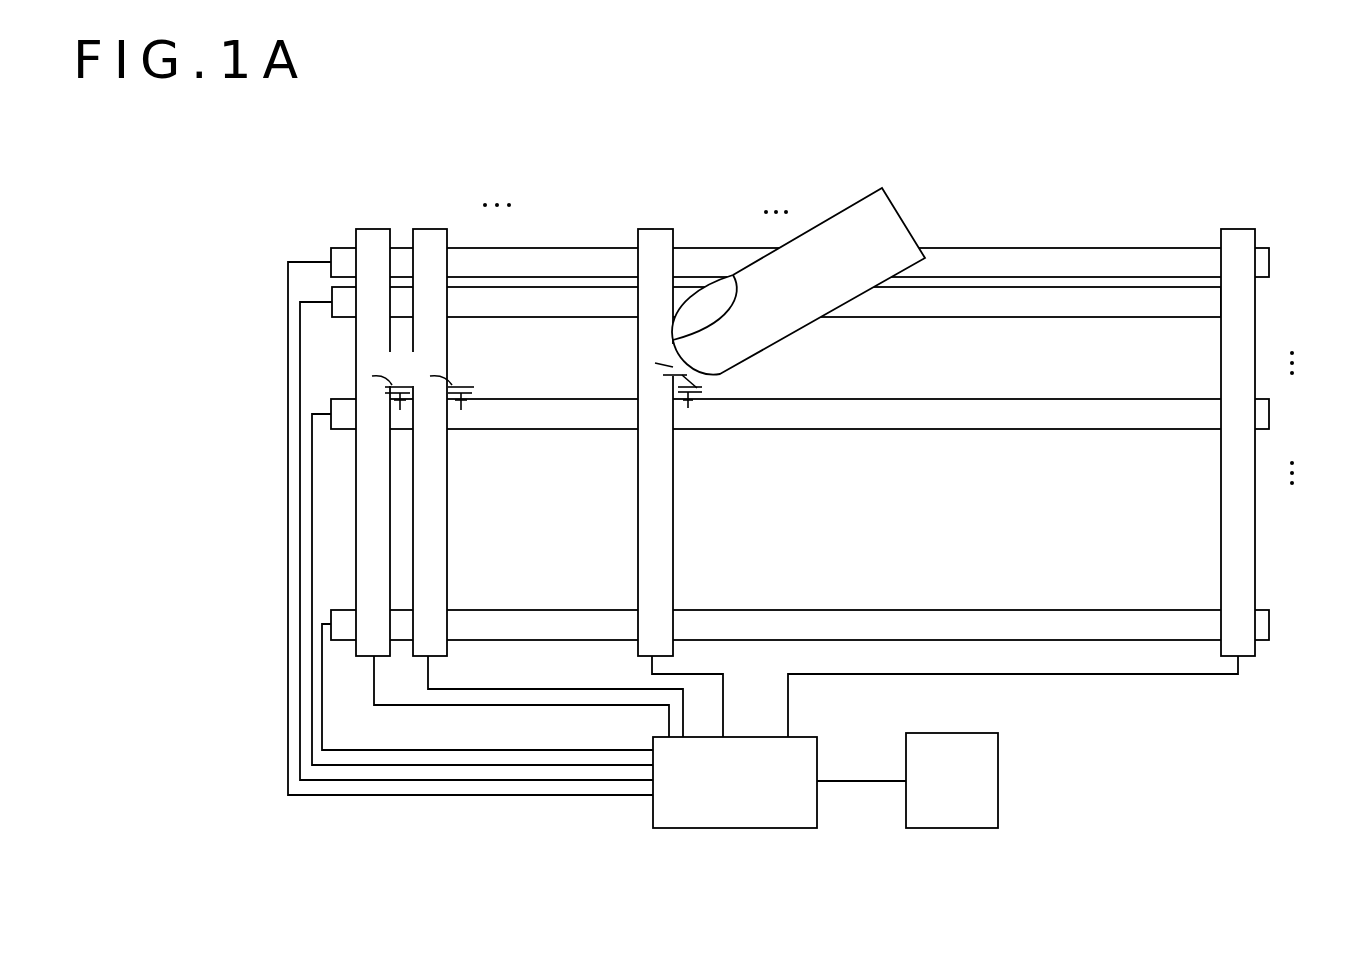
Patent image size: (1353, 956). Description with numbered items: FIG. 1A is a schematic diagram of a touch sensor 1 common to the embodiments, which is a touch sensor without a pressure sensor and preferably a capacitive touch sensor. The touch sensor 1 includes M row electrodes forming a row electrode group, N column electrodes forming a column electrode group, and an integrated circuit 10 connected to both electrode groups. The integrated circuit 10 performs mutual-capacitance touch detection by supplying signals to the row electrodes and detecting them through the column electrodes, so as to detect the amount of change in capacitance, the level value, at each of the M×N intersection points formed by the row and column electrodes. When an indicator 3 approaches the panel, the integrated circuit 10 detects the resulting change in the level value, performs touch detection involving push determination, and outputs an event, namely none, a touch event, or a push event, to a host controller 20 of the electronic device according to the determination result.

The touch sensor 1 is at (850, 71).
The indicator 3 is at (881, 188).
The integrated circuit 10 is at (735, 782).
The host controller 20 is at (952, 780).